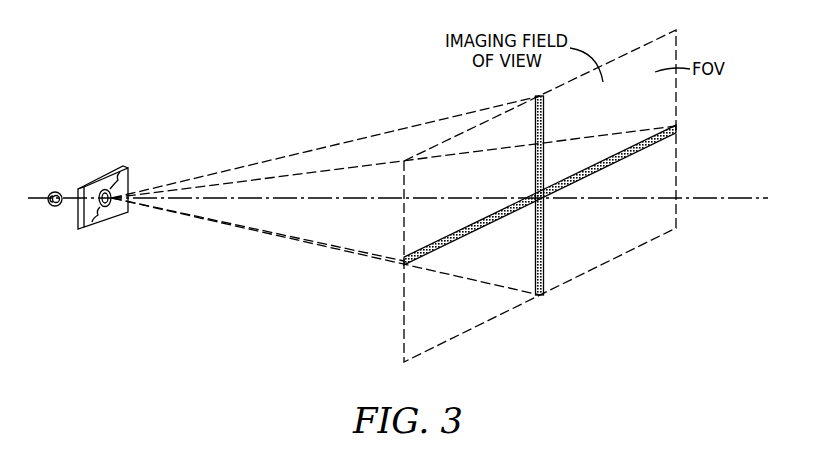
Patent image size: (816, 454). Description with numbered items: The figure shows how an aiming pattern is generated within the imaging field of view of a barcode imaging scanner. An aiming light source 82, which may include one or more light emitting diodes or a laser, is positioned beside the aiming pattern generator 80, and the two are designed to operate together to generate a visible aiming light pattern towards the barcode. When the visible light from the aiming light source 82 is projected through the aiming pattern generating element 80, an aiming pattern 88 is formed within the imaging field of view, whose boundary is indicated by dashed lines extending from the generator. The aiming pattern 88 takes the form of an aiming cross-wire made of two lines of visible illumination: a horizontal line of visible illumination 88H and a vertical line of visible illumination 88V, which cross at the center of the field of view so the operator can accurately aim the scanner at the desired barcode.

The aiming pattern generator 80 is at (150, 154).
The aiming light source 82 is at (53, 207).
The aiming pattern 88 is at (560, 209).
The horizontal line of visible illumination 88H is at (424, 262).
The vertical line of visible illumination 88V is at (546, 270).